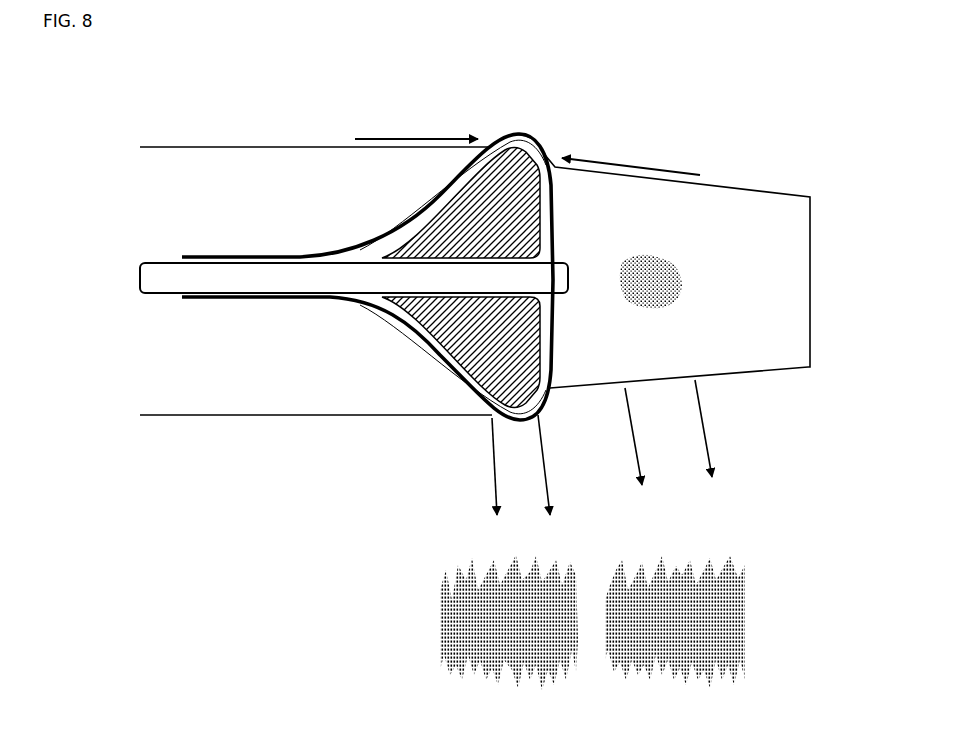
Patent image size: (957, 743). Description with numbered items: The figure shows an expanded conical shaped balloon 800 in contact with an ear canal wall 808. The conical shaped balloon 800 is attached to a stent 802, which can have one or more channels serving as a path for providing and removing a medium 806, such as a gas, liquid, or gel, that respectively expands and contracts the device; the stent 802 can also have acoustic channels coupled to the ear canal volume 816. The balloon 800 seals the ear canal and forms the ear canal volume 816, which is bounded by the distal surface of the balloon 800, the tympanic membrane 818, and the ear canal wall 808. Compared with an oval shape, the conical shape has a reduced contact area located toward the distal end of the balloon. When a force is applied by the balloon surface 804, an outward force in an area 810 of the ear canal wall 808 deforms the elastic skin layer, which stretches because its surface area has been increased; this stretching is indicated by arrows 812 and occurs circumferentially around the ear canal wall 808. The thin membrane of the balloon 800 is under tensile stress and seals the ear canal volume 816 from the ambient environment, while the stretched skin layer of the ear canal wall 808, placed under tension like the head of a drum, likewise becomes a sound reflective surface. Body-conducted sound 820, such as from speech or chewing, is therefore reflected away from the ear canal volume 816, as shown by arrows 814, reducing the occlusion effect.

The conical shaped balloon 800 is at (277, 225).
The stent 802 is at (140, 289).
The balloon surface 804 is at (398, 233).
The medium 806 is at (450, 372).
The ear canal wall 808 is at (308, 138).
The area 810 is at (535, 124).
The arrows 812 is at (527, 146).
The arrows 814 is at (492, 418).
The ear canal volume 816 is at (685, 282).
The tympanic membrane 818 is at (820, 310).
The sound 820 is at (577, 637).